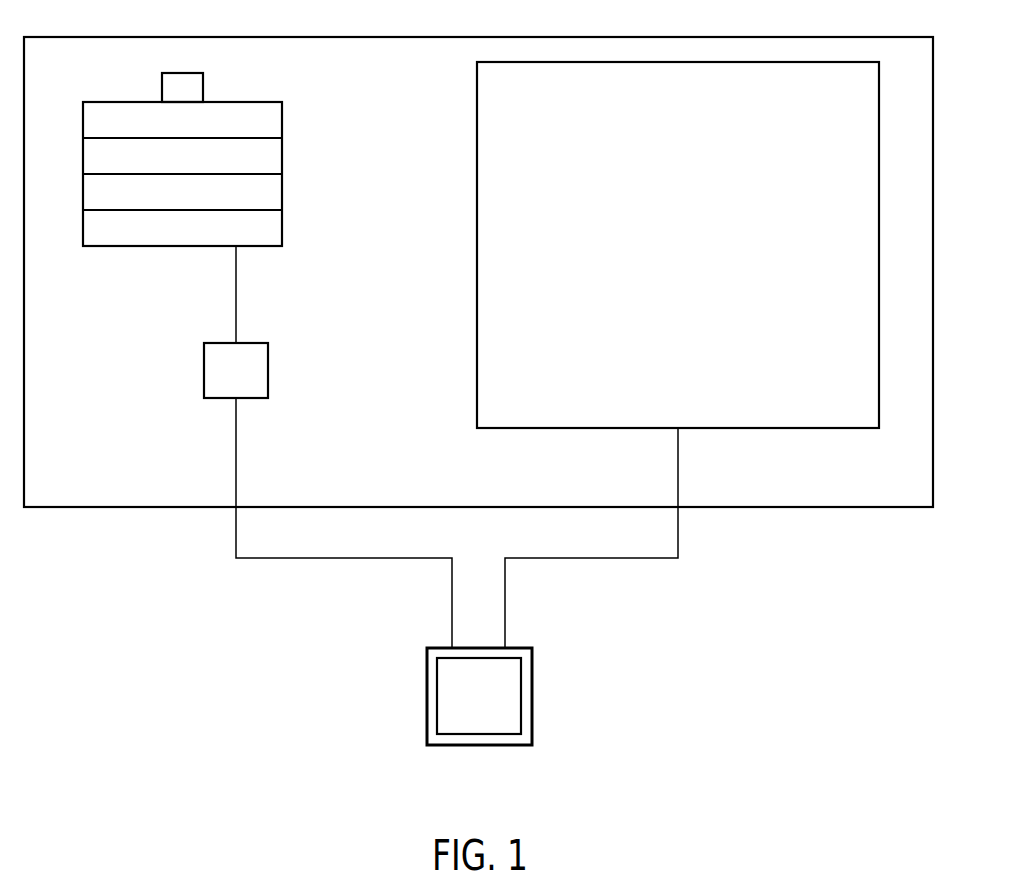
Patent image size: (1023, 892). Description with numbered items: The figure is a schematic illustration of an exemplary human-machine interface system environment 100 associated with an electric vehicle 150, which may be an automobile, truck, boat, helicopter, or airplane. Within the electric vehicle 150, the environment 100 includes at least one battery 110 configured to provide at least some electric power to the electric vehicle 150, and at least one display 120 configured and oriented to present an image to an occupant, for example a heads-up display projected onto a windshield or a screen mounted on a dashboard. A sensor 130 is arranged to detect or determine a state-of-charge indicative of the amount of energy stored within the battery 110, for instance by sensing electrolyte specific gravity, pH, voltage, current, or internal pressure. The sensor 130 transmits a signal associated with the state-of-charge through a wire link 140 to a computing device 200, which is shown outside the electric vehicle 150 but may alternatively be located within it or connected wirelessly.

The HMI system environment 100 is at (520, 400).
The battery 110 is at (134, 247).
The display 120 is at (584, 428).
The sensor 130 is at (204, 368).
The wire link 140 is at (452, 608).
The electric vehicle 150 is at (934, 365).
The computing device 200 is at (533, 695).